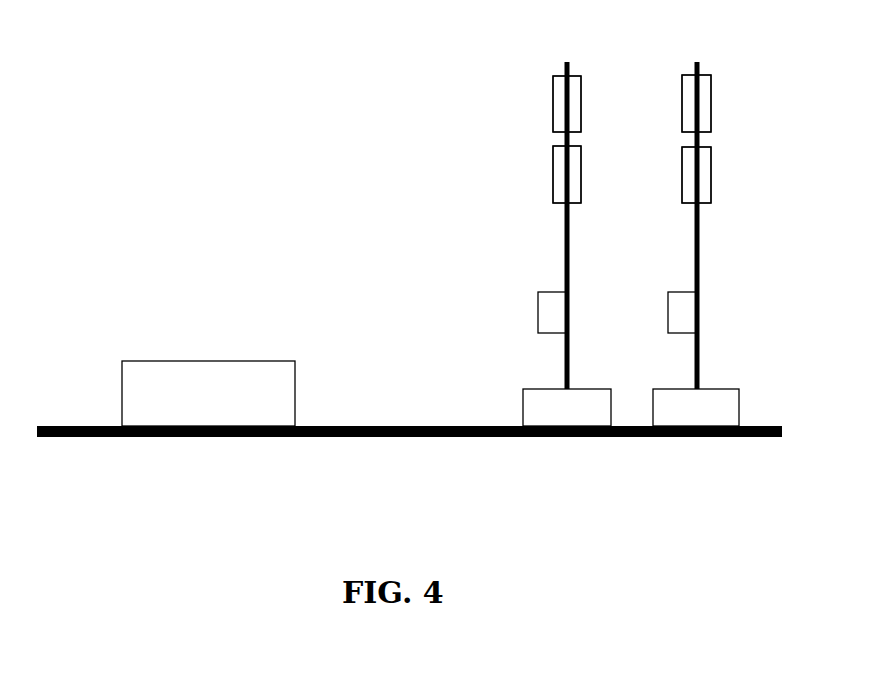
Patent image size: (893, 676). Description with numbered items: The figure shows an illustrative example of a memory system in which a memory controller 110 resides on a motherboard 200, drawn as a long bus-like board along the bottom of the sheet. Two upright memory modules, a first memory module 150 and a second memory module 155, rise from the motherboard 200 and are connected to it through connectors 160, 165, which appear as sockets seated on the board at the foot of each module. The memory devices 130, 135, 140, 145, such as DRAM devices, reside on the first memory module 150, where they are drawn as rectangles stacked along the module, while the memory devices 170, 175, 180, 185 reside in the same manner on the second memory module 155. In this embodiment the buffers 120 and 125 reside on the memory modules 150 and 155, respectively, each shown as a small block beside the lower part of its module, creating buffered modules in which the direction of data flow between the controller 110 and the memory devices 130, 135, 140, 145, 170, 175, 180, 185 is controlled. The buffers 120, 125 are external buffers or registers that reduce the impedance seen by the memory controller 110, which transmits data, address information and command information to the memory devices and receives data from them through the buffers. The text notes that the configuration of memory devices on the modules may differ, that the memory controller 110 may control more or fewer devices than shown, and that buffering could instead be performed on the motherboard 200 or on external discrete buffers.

The memory controller 110 is at (122, 388).
The buffer 120 is at (538, 318).
The buffer 125 is at (668, 318).
The memory device 130 is at (553, 168).
The memory device 135 is at (553, 88).
The memory device 140 is at (581, 178).
The memory device 145 is at (581, 100).
The first memory module 150 is at (567, 376).
The second memory module 155 is at (697, 361).
The connector 160 is at (523, 405).
The connector 165 is at (739, 418).
The memory device 170 is at (682, 197).
The memory device 175 is at (682, 83).
The memory device 180 is at (711, 189).
The memory device 185 is at (711, 103).
The motherboard 200 is at (60, 437).